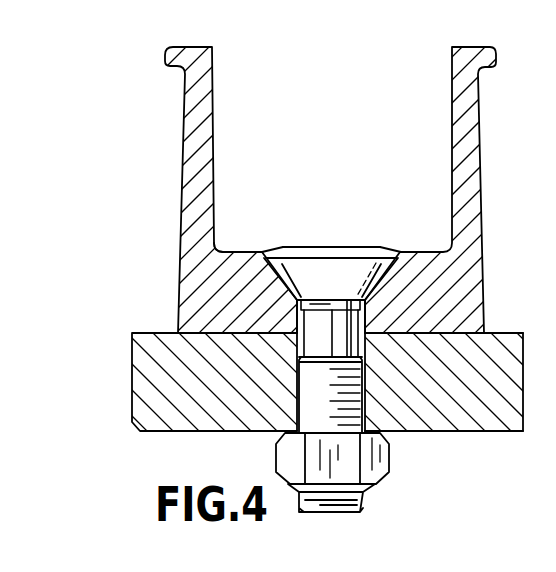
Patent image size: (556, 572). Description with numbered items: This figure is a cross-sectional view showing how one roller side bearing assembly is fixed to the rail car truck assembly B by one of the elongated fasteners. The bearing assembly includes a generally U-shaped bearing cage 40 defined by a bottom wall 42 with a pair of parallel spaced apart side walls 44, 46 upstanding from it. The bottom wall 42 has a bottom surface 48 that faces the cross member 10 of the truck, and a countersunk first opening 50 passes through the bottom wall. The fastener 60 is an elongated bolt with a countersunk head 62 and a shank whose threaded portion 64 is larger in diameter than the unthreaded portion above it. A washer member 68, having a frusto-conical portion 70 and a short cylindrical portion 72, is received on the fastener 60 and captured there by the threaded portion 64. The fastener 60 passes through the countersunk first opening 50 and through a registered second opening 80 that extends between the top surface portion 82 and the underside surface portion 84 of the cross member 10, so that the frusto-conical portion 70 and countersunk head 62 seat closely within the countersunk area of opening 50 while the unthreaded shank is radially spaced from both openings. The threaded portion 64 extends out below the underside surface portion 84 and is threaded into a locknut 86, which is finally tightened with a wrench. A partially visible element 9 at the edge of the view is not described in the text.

The cross member 10 is at (234, 410).
The bearing cage 40 is at (278, 185).
The bottom wall 42 is at (250, 243).
The side wall 44 is at (468, 190).
The side wall 46 is at (187, 187).
The bottom surface 48 is at (251, 336).
The countersunk first opening 50 is at (328, 356).
The fastener 60 is at (290, 352).
The countersunk head 62 is at (354, 250).
The threaded portion 64 is at (362, 396).
The washer member 68 is at (362, 276).
The frusto-conical portion 70 is at (304, 272).
The cylindrical portion 72 is at (350, 305).
The second opening 80 is at (374, 341).
The top surface portion 82 is at (435, 334).
The underside surface portion 84 is at (462, 432).
The locknut 86 is at (376, 453).
The member 90 9 is at (548, 55).
The rail car truck assembly B is at (150, 445).